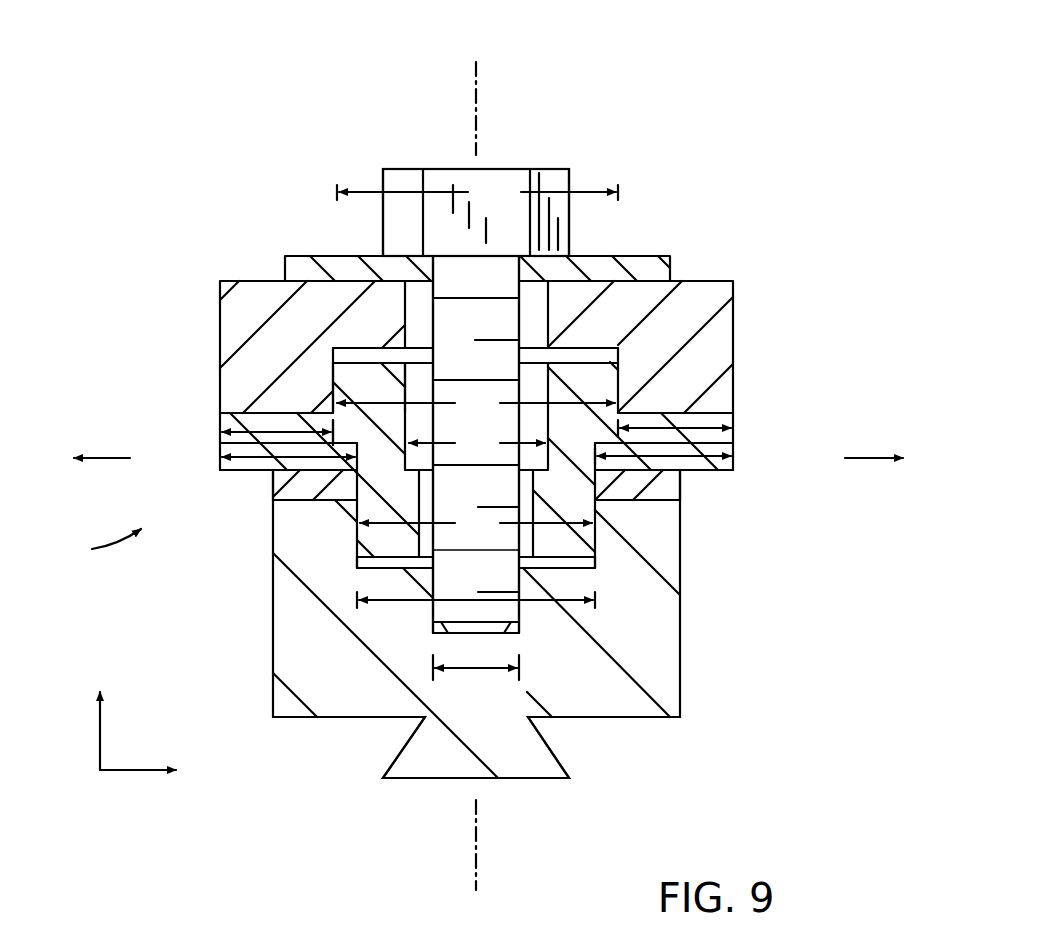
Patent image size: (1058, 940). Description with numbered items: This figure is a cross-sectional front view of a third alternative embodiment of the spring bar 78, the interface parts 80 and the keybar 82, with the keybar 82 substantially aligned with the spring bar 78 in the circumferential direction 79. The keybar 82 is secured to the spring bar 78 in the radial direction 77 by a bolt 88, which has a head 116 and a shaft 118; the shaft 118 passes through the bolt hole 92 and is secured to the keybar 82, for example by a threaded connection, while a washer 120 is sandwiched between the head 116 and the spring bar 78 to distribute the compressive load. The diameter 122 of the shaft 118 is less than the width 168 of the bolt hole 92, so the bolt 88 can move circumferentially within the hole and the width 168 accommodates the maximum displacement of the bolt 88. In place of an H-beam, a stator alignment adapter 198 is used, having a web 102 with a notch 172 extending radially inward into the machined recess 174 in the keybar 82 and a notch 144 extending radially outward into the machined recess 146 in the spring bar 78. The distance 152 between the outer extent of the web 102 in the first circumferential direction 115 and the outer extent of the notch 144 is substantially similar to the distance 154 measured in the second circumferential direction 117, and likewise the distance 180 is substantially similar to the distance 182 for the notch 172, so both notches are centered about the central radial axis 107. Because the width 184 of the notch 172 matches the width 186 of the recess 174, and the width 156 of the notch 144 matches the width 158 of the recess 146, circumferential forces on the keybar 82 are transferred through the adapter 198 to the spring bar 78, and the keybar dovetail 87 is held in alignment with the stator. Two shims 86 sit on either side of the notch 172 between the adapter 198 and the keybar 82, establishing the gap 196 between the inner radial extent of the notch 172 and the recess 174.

The radial direction 77 is at (100, 775).
The spring bar 78 is at (703, 281).
The circumferential direction 79 is at (150, 775).
The interface parts 80 is at (98, 546).
The keybar 82 is at (273, 652).
The shim 86 is at (272, 482).
The keybar dovetail 87 is at (443, 785).
The bolt 88 is at (442, 160).
The bolt hole 92 is at (406, 446).
The web 102 is at (683, 444).
The central radial axis 107 is at (478, 62).
The first circumferential direction 115 is at (857, 450).
The head 116 is at (381, 180).
The second circumferential direction 117 is at (122, 450).
The shaft 118 is at (503, 612).
The washer 120 is at (327, 255).
The diameter 122 is at (455, 725).
The notch 144 is at (370, 360).
The machined recess 146 is at (348, 390).
The distance 152 is at (700, 422).
The distance 154 is at (273, 427).
The width 156 is at (476, 403).
The width 158 is at (477, 192).
The width 168 is at (477, 443).
The notch 172 is at (570, 540).
The machined recess 174 is at (458, 500).
The distance 180 is at (688, 458).
The distance 182 is at (257, 467).
The width 184 is at (476, 523).
The width 186 is at (400, 593).
The gap 196 is at (350, 564).
The stator alignment adapter 198 is at (222, 443).